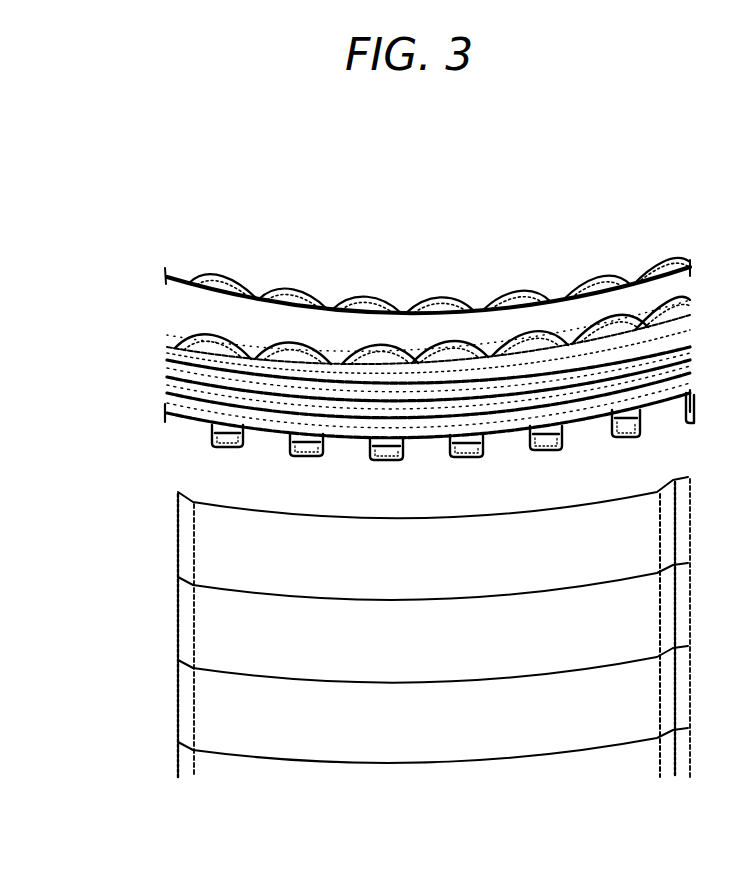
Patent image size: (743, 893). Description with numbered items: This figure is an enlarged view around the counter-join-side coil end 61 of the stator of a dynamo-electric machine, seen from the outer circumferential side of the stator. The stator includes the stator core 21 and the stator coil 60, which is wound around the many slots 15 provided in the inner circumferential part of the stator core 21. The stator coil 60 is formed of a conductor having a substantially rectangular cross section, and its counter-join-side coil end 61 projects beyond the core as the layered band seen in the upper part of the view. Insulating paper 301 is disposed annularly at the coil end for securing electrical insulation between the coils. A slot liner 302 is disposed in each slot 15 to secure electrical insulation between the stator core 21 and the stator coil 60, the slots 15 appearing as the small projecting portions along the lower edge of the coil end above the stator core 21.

The insulating paper 301 is at (380, 327).
The slot liner 302 is at (168, 423).
The stator coil 60 is at (531, 387).
The counter-join-side coil end 61 is at (452, 347).
The slot 15 is at (290, 450).
The stator core 21 is at (528, 703).